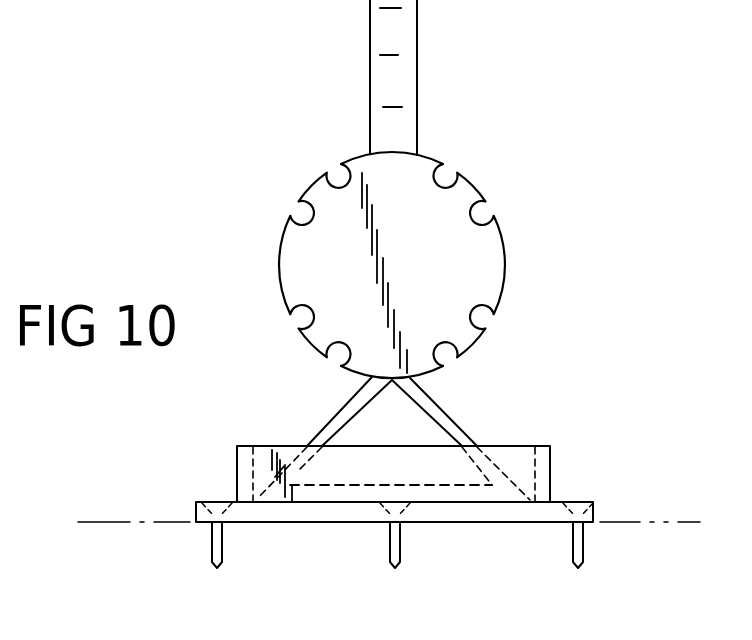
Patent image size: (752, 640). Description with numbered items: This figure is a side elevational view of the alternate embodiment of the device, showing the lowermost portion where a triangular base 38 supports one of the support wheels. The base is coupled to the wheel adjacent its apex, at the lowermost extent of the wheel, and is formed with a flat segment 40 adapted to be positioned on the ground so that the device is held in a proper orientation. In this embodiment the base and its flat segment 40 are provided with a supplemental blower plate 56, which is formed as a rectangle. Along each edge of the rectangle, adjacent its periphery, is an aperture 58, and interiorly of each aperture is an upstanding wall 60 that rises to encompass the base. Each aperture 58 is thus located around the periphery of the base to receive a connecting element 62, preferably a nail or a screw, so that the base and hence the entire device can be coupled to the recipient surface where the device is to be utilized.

The triangular base 38 is at (455, 406).
The flat segment 40 is at (381, 488).
The supplemental blower plate 56 is at (498, 512).
The aperture 58 is at (87, 0).
The upstanding wall 60 is at (550, 470).
The connecting element 62 is at (222, 545).